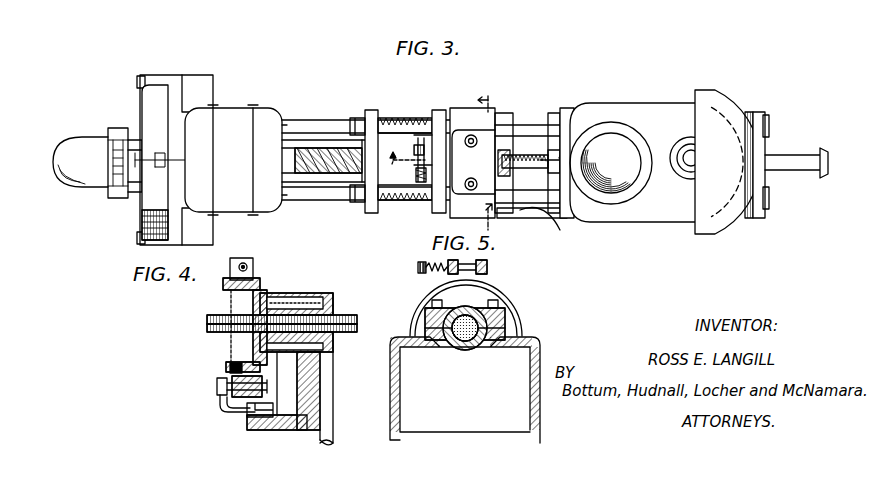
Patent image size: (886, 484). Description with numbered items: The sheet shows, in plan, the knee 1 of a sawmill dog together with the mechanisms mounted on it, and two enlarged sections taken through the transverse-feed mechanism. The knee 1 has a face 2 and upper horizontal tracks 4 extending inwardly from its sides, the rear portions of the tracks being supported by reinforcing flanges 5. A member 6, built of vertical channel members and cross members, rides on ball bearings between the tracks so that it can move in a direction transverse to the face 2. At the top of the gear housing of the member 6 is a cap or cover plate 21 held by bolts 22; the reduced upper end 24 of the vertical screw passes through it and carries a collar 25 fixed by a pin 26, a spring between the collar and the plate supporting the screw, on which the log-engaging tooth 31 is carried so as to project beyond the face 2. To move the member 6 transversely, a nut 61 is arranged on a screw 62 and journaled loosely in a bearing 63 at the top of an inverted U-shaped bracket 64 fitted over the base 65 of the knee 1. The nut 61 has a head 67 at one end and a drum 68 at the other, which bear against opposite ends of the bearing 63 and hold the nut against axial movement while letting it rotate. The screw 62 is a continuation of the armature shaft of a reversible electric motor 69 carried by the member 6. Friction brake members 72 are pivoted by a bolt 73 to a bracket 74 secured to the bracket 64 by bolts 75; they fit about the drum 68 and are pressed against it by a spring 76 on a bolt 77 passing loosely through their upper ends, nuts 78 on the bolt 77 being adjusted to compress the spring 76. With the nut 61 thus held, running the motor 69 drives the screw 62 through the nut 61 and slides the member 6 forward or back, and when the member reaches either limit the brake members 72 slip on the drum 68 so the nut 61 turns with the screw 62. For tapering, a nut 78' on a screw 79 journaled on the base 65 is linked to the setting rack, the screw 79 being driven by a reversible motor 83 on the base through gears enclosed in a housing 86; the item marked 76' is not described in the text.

In FIG. 3, the knee 1 is at (745, 108).
In FIG. 3, the face 2 is at (770, 122).
In FIG. 3, the upper horizontal tracks 4 is at (475, 157).
In FIG. 3, the reinforcing flanges 5 is at (482, 207).
In FIG. 3, the member 6 is at (484, 155).
In FIG. 3, the cap or cover plate 21 is at (616, 115).
In FIG. 3, the bolts 22 is at (572, 118).
In FIG. 3, the upper end of the screw 24 is at (690, 152).
In FIG. 3, the collar 25 is at (678, 172).
In FIG. 3, the pin 26 is at (692, 176).
In FIG. 3, the log-engaging portion or tooth 31 is at (806, 154).
In FIG. 4, the nut 61 is at (302, 297).
In FIG. 5, the nut 61 is at (505, 326).
In FIG. 3, the screw 62 is at (520, 153).
In FIG. 4, the screw 62 is at (352, 316).
In FIG. 5, the screw 62 is at (506, 316).
In FIG. 3, the bearing 63 is at (473, 162).
In FIG. 4, the bearing 63 is at (279, 293).
In FIG. 5, the bearing 63 is at (462, 343).
In FIG. 3, the inverted U-shaped bracket 64 is at (468, 115).
In FIG. 4, the inverted U-shaped bracket 64 is at (322, 395).
In FIG. 5, the inverted U-shaped bracket 64 is at (540, 355).
In FIG. 3, the base of knee 65 is at (348, 195).
In FIG. 3, the head 67 is at (512, 135).
In FIG. 4, the head 67 is at (332, 294).
In FIG. 3, the drum 68 is at (418, 145).
In FIG. 4, the drum 68 is at (230, 297).
In FIG. 5, the drum 68 is at (436, 293).
In FIG. 3, the reversible electric motor 69 is at (562, 118).
In FIG. 3, the friction brake members 72 is at (440, 118).
In FIG. 4, the friction brake members 72 is at (230, 366).
In FIG. 5, the friction brake members 72 is at (512, 292).
In FIG. 4, the bolt 73 is at (217, 388).
In FIG. 4, the bracket 74 is at (230, 410).
In FIG. 4, the bolts 75 is at (272, 410).
In FIG. 5, the spring 76 is at (414, 258).
In FIG. 3, the spring 76' is at (561, 234).
In FIG. 3, the bolt 77 is at (418, 170).
In FIG. 4, the bolt 77 is at (244, 263).
In FIG. 5, the bolt 77 is at (488, 266).
In FIG. 5, the nuts 78 is at (413, 271).
In FIG. 3, the nut 78' is at (391, 152).
In FIG. 3, the screw 79 is at (318, 142).
In FIG. 3, the reversible motor 83 is at (236, 160).
In FIG. 3, the housing 86 is at (148, 107).